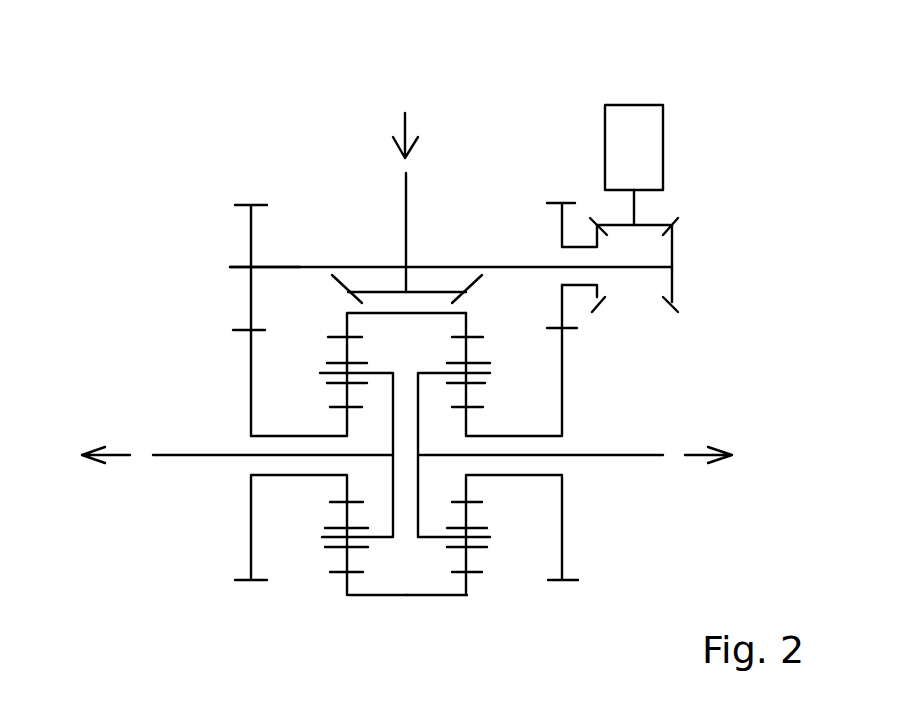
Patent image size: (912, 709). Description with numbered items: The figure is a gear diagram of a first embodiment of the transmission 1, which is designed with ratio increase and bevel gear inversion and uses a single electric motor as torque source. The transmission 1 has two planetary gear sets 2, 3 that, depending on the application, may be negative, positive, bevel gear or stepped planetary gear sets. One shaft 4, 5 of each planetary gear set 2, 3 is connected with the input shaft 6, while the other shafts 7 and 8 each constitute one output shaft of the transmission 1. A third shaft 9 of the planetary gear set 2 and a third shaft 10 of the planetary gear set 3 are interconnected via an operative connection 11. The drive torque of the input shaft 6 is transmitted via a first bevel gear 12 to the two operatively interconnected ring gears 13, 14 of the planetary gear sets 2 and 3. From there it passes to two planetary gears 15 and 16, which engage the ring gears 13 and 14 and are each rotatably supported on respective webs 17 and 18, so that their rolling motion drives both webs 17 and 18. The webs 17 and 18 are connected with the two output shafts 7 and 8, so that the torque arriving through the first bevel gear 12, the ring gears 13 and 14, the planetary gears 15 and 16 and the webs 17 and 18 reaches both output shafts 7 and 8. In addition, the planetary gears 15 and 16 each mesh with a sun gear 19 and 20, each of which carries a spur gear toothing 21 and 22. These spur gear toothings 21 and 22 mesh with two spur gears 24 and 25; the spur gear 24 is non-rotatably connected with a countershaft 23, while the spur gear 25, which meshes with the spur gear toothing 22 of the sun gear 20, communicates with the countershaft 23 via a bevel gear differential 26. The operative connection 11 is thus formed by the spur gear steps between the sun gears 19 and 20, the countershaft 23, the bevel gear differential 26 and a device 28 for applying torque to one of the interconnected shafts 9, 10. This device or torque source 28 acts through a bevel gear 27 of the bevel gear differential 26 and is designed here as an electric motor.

The transmission 1 is at (88, 200).
The planetary gear set 2 is at (320, 328).
The planetary gear set 3 is at (533, 367).
The shaft 4 is at (341, 327).
The shaft 5 is at (477, 330).
The input shaft 6 is at (407, 183).
The output shaft 7 is at (182, 457).
The output shaft 8 is at (645, 455).
The third shaft 9 is at (336, 490).
The third shaft 10 is at (468, 488).
The operative connection 11 is at (474, 262).
The first bevel gear 12 is at (362, 292).
The ring gear 13 is at (330, 337).
The ring gear 14 is at (467, 338).
The planetary gear 15 is at (345, 397).
The planetary gear 16 is at (467, 398).
The web 17 is at (383, 540).
The web 18 is at (433, 540).
The sun gear 19 is at (347, 427).
The sun gear 20 is at (467, 425).
The spur gear toothing 21 is at (235, 330).
The spur gear toothing 22 is at (615, 328).
The countershaft 23 is at (285, 267).
The spur gear 24 is at (250, 240).
The spur gear 25 is at (563, 230).
The bevel gear differential 26 is at (674, 257).
The bevel gear 27 is at (660, 223).
The device 28 is at (652, 103).